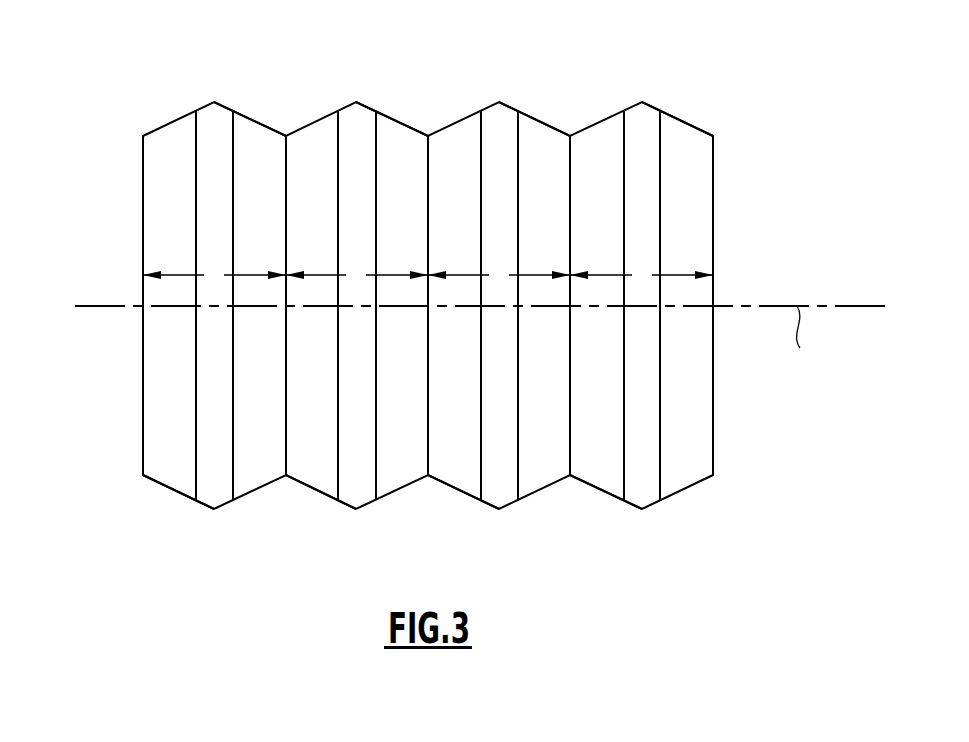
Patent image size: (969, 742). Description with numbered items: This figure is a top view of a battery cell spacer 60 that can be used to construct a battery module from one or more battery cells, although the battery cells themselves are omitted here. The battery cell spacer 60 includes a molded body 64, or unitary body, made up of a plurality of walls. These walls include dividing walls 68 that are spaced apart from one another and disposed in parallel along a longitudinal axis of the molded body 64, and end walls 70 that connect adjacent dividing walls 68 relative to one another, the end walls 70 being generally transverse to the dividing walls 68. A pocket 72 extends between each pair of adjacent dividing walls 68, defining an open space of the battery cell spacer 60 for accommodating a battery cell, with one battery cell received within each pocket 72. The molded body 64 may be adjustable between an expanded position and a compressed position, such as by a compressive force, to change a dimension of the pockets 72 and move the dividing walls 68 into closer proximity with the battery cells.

The battery cell spacer 60 is at (100, 166).
The molded body 64 is at (415, 152).
The dividing walls 68 is at (143, 238).
The end walls 70 is at (259, 111).
The pocket 72 is at (200, 235).